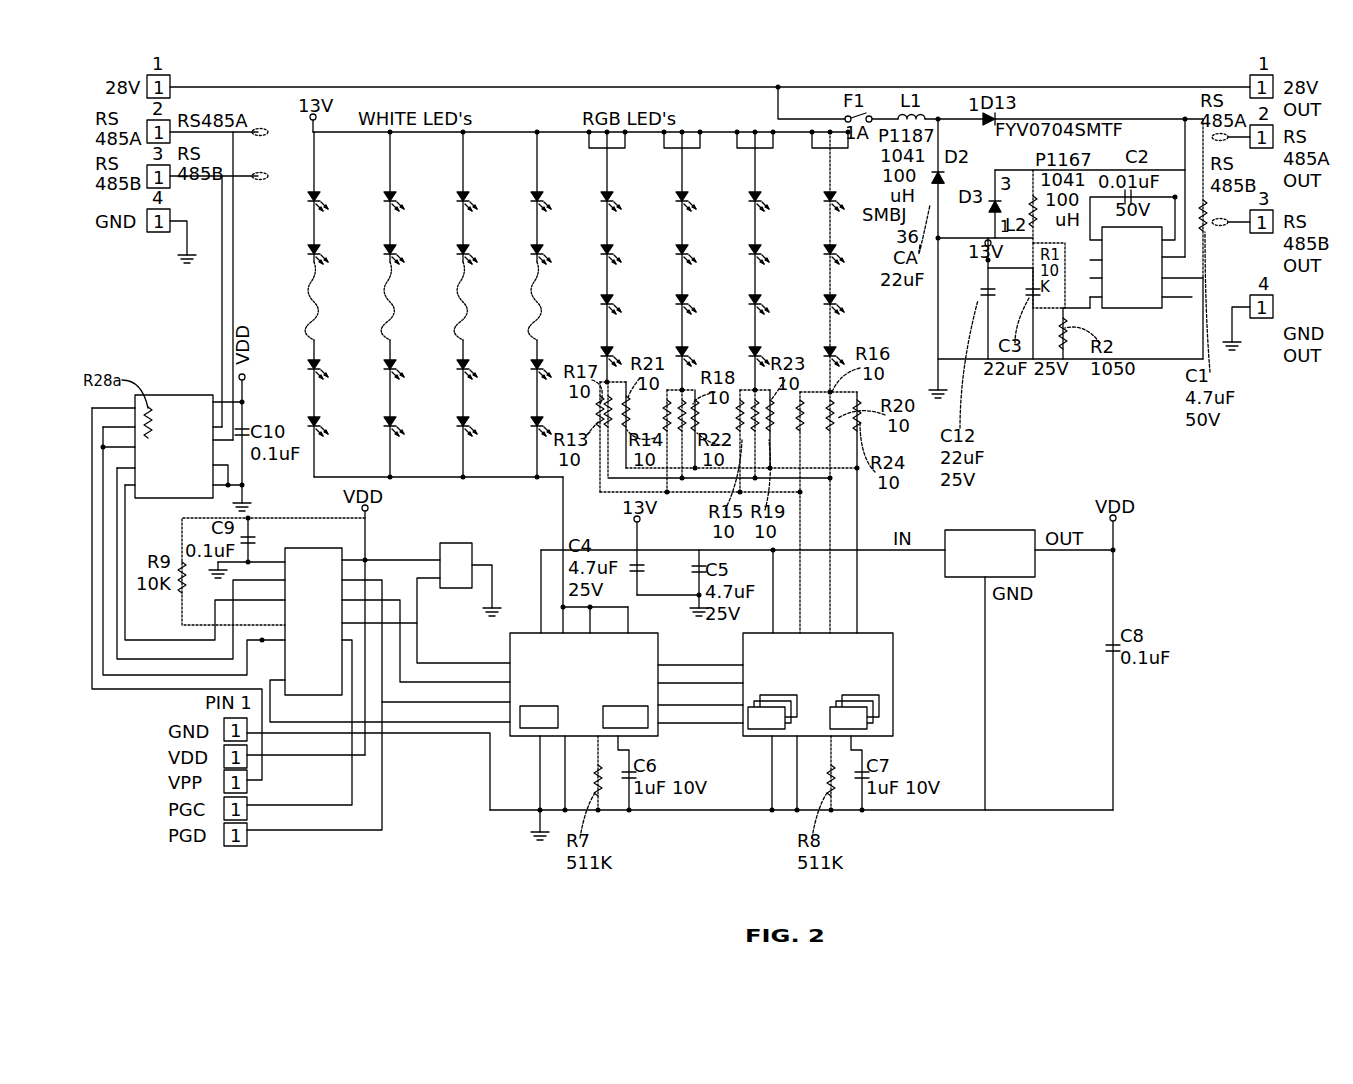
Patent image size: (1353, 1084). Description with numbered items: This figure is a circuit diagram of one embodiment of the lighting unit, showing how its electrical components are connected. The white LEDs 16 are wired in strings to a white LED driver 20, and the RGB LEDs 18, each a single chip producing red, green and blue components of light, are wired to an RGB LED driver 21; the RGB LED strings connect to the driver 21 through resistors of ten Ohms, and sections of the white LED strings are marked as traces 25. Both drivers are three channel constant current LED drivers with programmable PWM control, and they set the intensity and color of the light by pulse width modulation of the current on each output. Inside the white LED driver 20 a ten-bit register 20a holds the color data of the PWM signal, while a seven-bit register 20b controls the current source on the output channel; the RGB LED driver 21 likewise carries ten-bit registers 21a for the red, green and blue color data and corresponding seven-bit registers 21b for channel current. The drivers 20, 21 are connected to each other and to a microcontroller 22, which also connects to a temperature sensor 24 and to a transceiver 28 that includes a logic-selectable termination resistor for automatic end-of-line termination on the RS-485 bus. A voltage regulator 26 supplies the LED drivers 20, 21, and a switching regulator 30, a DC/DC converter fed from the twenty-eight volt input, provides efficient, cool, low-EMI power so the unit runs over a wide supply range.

The white LED 16 is at (437, 304).
The RGB LED 18 is at (723, 261).
The white LED driver 20 is at (584, 684).
The 10-bit register 20a is at (539, 717).
The 7 bit register 20b is at (625, 717).
The RGB LED driver 21 is at (818, 684).
The 10-bit register 21a is at (772, 712).
The RGB LED driver channel 21b is at (854, 712).
The microcontroller 22 is at (313, 621).
The temperature sensor 24 is at (456, 565).
The trace 25 is at (424, 304).
The voltage regulator 26 is at (990, 553).
The transceiver 28 is at (174, 446).
The switching regulator 30 is at (1132, 267).